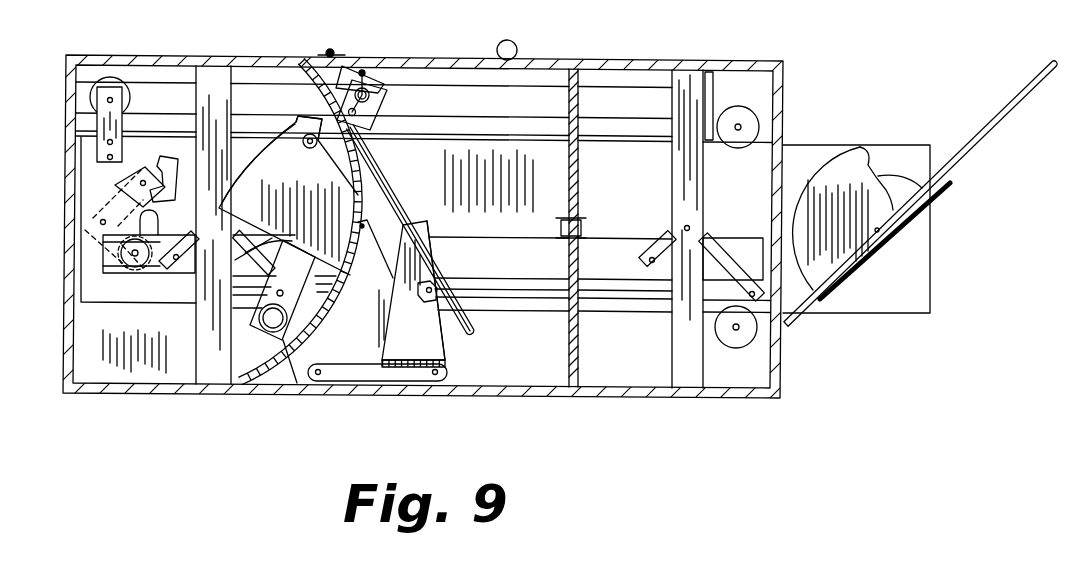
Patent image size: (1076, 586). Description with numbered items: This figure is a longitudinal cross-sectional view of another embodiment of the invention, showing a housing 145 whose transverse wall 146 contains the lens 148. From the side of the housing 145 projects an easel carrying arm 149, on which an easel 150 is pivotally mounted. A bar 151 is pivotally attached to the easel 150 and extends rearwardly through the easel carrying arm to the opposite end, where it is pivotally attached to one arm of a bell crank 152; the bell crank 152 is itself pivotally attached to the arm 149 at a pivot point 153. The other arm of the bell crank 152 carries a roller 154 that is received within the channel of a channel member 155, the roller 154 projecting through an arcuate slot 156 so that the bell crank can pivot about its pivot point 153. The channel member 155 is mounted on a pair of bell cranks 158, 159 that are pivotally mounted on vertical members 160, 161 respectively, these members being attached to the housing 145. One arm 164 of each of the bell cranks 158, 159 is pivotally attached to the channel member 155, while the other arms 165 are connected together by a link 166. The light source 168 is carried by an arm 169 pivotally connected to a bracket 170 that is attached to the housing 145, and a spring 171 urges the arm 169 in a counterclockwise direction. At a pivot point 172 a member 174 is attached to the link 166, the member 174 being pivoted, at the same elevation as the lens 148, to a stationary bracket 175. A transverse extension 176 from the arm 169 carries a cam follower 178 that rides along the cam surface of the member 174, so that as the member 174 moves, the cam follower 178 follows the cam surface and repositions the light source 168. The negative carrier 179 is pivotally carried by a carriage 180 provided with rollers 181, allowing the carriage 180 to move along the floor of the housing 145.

The housing 145 is at (184, 46).
The transverse wall 146 is at (603, 352).
The lens 148 is at (583, 228).
The easel carrying arm 149 is at (789, 150).
The easel 150 is at (966, 146).
The bar 151 is at (165, 156).
The bell crank 152 is at (105, 208).
The pivot point 153 is at (101, 222).
The roller 154 is at (104, 272).
The channel member 155 is at (509, 219).
The arcuate slot 156 is at (157, 222).
The bell crank 158 is at (288, 195).
The bell crank 159 is at (720, 245).
The vertical member 160 is at (216, 66).
The vertical member 161 is at (683, 78).
The arm 164 is at (643, 254).
The arm 165 is at (282, 243).
The link 166 is at (503, 298).
The light source 168 is at (261, 331).
The arm 169 is at (325, 297).
The bracket 170 is at (369, 74).
The spring 171 is at (381, 112).
The pivot point 172 is at (420, 303).
The member 174 is at (253, 173).
The stationary bracket 175 is at (366, 338).
The transverse extension 176 is at (304, 121).
The cam follower 178 is at (304, 146).
The negative carrier 179 is at (396, 198).
The carriage 180 is at (441, 350).
The rollers 181 is at (316, 363).